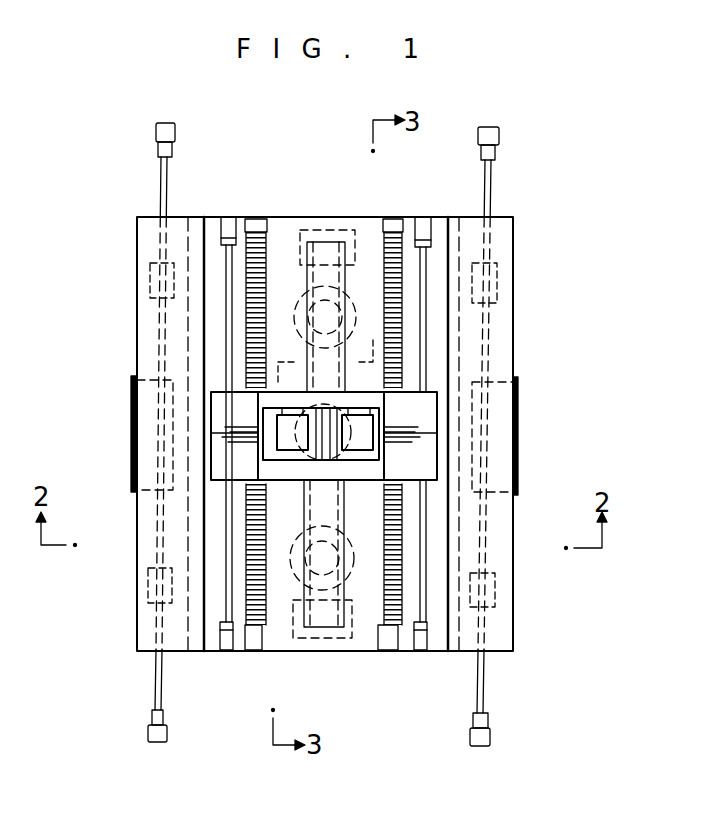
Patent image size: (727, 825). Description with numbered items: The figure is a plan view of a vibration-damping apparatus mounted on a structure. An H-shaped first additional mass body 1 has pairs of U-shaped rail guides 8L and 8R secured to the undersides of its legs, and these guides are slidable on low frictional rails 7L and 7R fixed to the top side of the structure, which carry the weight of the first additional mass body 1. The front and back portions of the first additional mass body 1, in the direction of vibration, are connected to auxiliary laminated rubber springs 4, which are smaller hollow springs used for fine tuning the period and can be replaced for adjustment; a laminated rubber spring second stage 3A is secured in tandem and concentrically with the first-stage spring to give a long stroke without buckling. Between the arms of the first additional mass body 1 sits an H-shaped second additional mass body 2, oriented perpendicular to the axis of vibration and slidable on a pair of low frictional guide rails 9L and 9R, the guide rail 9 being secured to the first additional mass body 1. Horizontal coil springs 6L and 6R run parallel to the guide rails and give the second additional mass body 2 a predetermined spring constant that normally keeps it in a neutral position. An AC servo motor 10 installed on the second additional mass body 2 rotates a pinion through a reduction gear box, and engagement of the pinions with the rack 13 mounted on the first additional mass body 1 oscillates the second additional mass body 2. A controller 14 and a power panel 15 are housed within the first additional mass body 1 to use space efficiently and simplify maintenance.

The first additional mass body 1 is at (502, 243).
The second additional mass body 2 is at (423, 408).
The laminated rubber spring second stage 3A is at (310, 313).
The auxiliary laminated rubber spring 4 is at (340, 230).
The horizontal coil spring 6L is at (262, 600).
The horizontal coil spring 6R is at (402, 265).
The low frictional rail 7L is at (155, 690).
The low frictional rail 7R is at (500, 690).
The U-shaped rail guide 8L is at (150, 290).
The U-shaped rail guide 8R is at (497, 293).
The guide rail 9 is at (427, 343).
The low frictional guide rail 9L is at (223, 535).
The low frictional guide rail 9R is at (422, 612).
The AC servo motor 10 is at (358, 463).
The rack 13 is at (327, 252).
The controller 14 is at (147, 441).
The power panel 15 is at (500, 463).